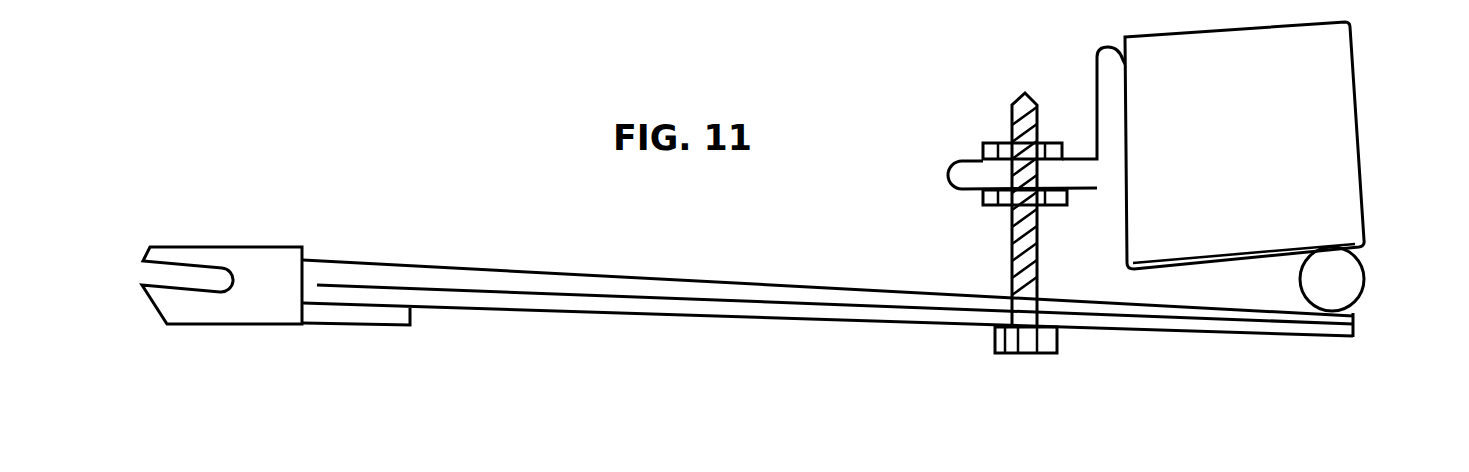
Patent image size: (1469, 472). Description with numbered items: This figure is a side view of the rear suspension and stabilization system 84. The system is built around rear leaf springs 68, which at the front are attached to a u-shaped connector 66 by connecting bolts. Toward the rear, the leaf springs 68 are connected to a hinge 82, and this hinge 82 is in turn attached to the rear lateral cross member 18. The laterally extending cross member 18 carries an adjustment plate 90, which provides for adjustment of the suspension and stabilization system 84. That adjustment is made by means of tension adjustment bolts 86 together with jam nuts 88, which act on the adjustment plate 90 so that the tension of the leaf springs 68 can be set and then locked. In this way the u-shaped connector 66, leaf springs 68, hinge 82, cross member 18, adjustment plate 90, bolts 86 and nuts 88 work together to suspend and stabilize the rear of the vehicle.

The rear lateral cross member 18 is at (1333, 123).
The u-shaped connector 66 is at (258, 327).
The rear leaf springs 68 is at (747, 307).
The hinge 82 is at (1342, 282).
The rear suspension and stabilization system 84 is at (375, 257).
The tension adjustment bolts 86 is at (1012, 262).
The jam nuts 88 is at (983, 150).
The adjustment plate 90 is at (1095, 62).